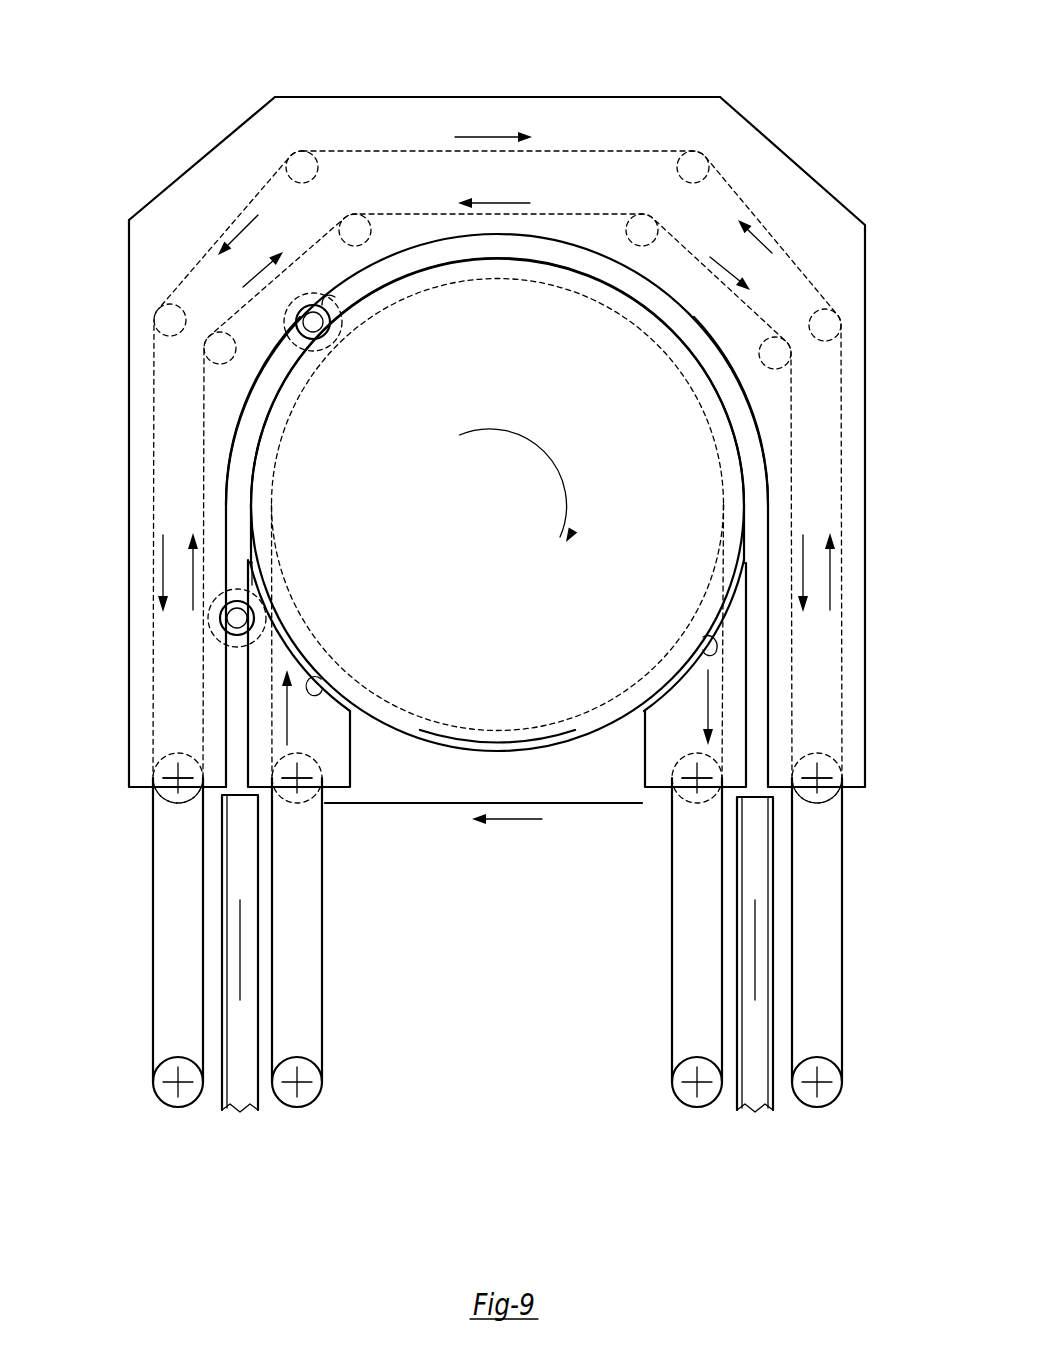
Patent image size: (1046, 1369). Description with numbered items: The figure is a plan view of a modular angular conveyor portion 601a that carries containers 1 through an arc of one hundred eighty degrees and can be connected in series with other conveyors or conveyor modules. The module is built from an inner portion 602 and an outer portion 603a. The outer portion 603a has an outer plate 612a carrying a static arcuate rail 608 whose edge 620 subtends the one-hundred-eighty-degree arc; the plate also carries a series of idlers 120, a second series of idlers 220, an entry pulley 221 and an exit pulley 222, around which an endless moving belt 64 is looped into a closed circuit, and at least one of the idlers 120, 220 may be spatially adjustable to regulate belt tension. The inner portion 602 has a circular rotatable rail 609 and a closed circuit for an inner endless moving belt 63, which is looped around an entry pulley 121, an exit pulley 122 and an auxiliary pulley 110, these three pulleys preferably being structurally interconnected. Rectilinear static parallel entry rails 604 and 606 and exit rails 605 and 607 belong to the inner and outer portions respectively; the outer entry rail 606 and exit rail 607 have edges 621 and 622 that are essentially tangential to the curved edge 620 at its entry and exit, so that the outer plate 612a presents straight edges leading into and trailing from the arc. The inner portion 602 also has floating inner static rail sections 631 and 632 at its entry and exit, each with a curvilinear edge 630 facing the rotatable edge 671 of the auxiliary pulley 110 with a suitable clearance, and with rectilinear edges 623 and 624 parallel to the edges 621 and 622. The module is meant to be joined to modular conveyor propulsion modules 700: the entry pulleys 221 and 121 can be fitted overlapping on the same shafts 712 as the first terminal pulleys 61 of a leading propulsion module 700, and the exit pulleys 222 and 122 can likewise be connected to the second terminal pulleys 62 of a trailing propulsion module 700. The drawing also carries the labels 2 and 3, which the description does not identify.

The modular angular conveyor portion 601a is at (180, 93).
The outer plate 612a is at (327, 115).
The outer portion 603a is at (175, 210).
The second series of idlers 220 is at (497, 168).
The series of idlers 120 is at (645, 230).
The container 1 is at (335, 297).
The pressure roller 2 is at (320, 332).
The edge 620 is at (247, 400).
The static arcuate rail 608 is at (228, 418).
The circular rotatable rail 609 is at (730, 475).
The inner portion 602 is at (308, 483).
The auxiliary pulley 110 is at (630, 532).
The curvilinear edge 630 is at (310, 693).
The entry rail 604 is at (263, 735).
The exit rail 605 is at (650, 742).
The endless moving belt 64 is at (150, 640).
The rectilinear edge 623 is at (250, 688).
The entry rail 606 is at (208, 693).
The edge 621 is at (225, 730).
The rectilinear edge 624 is at (745, 665).
The exit rail 607 is at (780, 693).
The edge 622 is at (772, 750).
The shaft 712 is at (173, 777).
The entry pulley 221 is at (167, 800).
The exit pulley 222 is at (833, 805).
The entry pulley 121 is at (300, 798).
The exit pulley 122 is at (652, 810).
The first terminal pulley 61 is at (153, 795).
The floating inner static rail section 631 is at (210, 795).
The floating inner static rail section 632 is at (817, 800).
The second terminal pulley 62 is at (165, 1073).
The modular conveyor propulsion module 700 is at (300, 990).
The sheet 3 is at (240, 960).
The inner endless moving belt 63 is at (422, 805).
The rotatable edge 671 is at (537, 748).